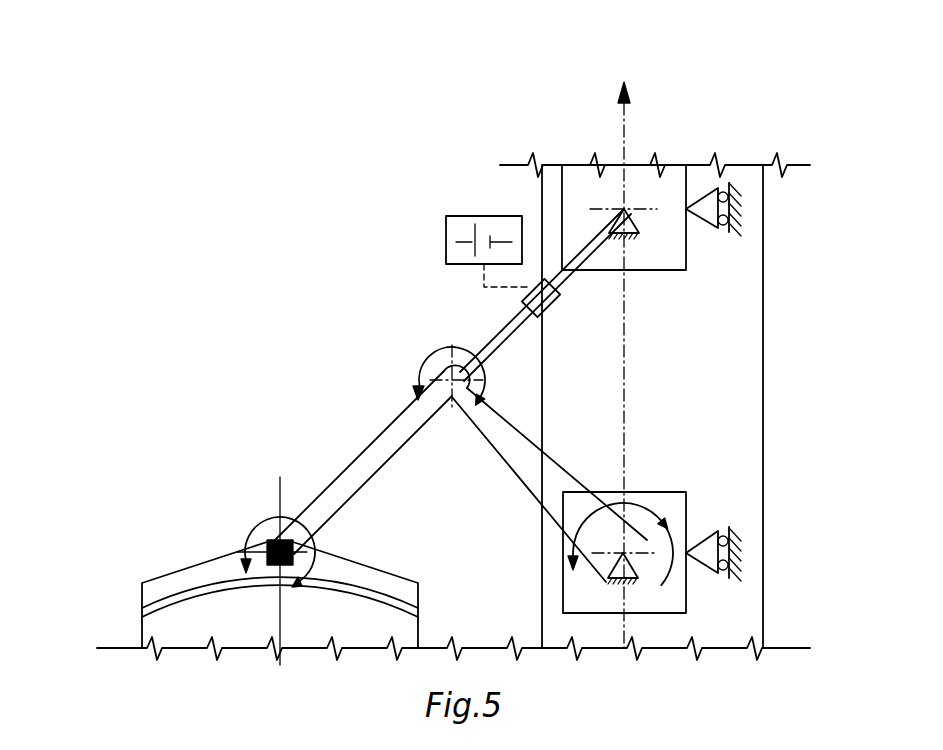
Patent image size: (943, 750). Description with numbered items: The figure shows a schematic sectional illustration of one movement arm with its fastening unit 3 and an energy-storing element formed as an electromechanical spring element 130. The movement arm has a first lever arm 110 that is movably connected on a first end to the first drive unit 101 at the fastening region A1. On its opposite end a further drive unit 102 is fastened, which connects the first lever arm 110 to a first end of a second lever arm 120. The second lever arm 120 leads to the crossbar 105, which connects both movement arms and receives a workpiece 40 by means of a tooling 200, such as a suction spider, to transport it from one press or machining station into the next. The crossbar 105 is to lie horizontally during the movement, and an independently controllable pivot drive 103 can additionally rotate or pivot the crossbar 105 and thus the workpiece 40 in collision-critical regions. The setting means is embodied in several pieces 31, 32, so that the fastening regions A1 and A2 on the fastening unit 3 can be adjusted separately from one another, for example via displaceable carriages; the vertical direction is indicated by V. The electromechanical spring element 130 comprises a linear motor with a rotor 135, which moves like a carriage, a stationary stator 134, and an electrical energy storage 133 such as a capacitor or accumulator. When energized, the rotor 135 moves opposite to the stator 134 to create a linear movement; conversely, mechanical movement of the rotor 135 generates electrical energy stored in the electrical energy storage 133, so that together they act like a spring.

The fastening unit 3 is at (722, 395).
The setting means piece 31 is at (663, 245).
The setting means piece 32 is at (670, 507).
The workpiece 40 is at (153, 600).
The first drive unit 101 is at (573, 543).
The further drive unit 102 is at (435, 353).
The pivot drive 103 is at (250, 535).
The crossbar 105 is at (268, 541).
The first lever arm 110 is at (550, 478).
The second lever arm 120 is at (350, 465).
The electromechanical spring element 130 is at (343, 108).
The electrical energy storage 133 is at (460, 222).
The stator 134 is at (573, 255).
The rotor 135 is at (488, 344).
The tooling 200 is at (165, 592).
The fastening region A1 is at (623, 553).
The fastening region A2 is at (624, 209).
The vertical direction V is at (640, 364).